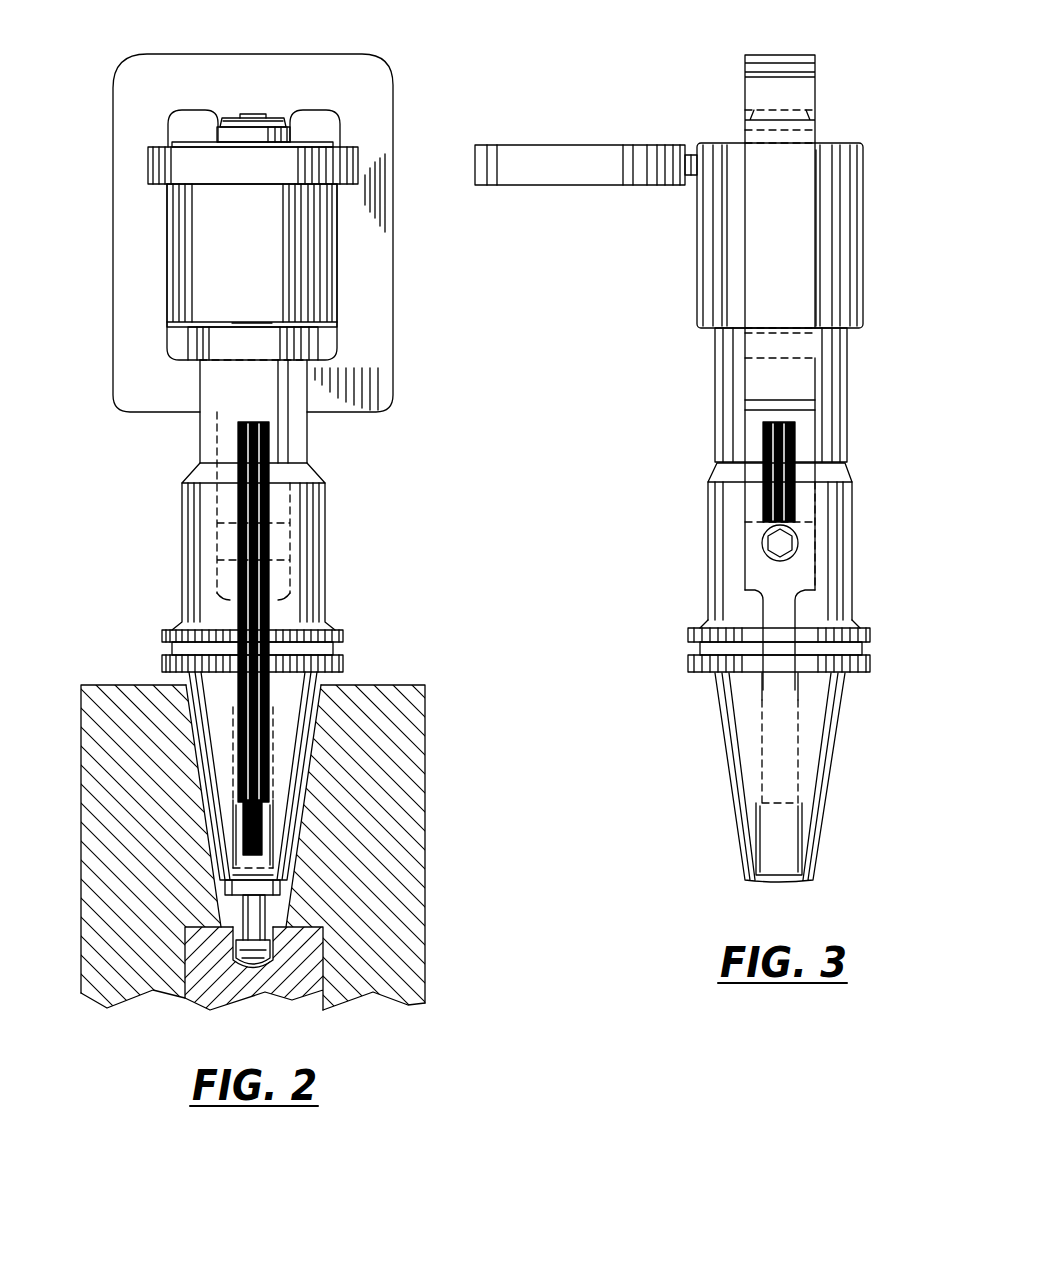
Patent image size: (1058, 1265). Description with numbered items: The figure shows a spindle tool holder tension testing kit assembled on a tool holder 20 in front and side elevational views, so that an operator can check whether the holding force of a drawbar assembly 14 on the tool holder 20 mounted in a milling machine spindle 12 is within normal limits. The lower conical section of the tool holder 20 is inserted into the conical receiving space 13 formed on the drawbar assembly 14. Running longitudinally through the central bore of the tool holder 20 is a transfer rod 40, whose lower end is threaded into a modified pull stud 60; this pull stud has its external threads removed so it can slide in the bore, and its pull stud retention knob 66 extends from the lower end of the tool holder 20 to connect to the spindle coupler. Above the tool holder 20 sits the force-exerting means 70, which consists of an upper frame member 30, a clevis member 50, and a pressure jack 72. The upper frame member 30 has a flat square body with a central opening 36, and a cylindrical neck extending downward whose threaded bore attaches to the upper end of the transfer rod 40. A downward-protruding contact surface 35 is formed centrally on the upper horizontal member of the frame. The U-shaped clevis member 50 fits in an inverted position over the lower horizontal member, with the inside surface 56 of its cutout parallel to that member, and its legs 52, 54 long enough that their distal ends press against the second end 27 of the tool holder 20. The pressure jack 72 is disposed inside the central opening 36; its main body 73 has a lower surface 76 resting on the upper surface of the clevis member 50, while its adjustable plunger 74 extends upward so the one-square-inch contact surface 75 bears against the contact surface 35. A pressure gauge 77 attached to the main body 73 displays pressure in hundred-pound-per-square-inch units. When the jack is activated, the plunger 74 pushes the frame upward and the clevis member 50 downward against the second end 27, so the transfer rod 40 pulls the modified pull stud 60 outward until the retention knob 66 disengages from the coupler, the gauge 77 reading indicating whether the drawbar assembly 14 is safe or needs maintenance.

In FIG. 2, the milling machine spindle 12 is at (400, 662).
In FIG. 2, the conical receiving space 13 is at (184, 692).
In FIG. 2, the drawbar assembly 14 is at (385, 725).
In FIG. 2, the tool holder 20 is at (310, 512).
In FIG. 3, the tool holder 20 is at (733, 552).
In FIG. 2, the second end of the tool holder 27 is at (302, 465).
In FIG. 3, the second end of the tool holder 27 is at (733, 463).
In FIG. 2, the upper frame member 30 is at (362, 61).
In FIG. 3, the upper frame member 30 is at (754, 68).
In FIG. 2, the contact surface 35 is at (268, 118).
In FIG. 3, the contact surface 35 is at (768, 118).
In FIG. 2, the central opening 36 is at (322, 130).
In FIG. 2, the transfer rod 40 is at (237, 440).
In FIG. 3, the transfer rod 40 is at (798, 448).
In FIG. 2, the clevis member 50 is at (222, 393).
In FIG. 3, the clevis member 50 is at (726, 385).
In FIG. 3, the leg of the clevis member 52 is at (735, 418).
In FIG. 3, the leg of the clevis member 54 is at (832, 420).
In FIG. 3, the inside surface of the U-shaped cutout 56 is at (790, 360).
In FIG. 2, the modified pull stud 60 is at (280, 882).
In FIG. 2, the pull stud retention knob 66 is at (268, 946).
In FIG. 2, the force-exerting means 70 is at (112, 328).
In FIG. 3, the force-exerting means 70 is at (687, 327).
In FIG. 2, the pressure jack 72 is at (290, 235).
In FIG. 3, the pressure jack 72 is at (838, 206).
In FIG. 2, the main body 73 is at (313, 285).
In FIG. 3, the main body 73 is at (838, 158).
In FIG. 2, the plunger 74 is at (290, 126).
In FIG. 3, the plunger 74 is at (792, 122).
In FIG. 2, the contact surface of the plunger 75 is at (246, 122).
In FIG. 2, the lower surface 76 is at (262, 327).
In FIG. 3, the lower surface 76 is at (782, 326).
In FIG. 2, the pressure gauge 77 is at (170, 160).
In FIG. 3, the pressure gauge 77 is at (582, 162).